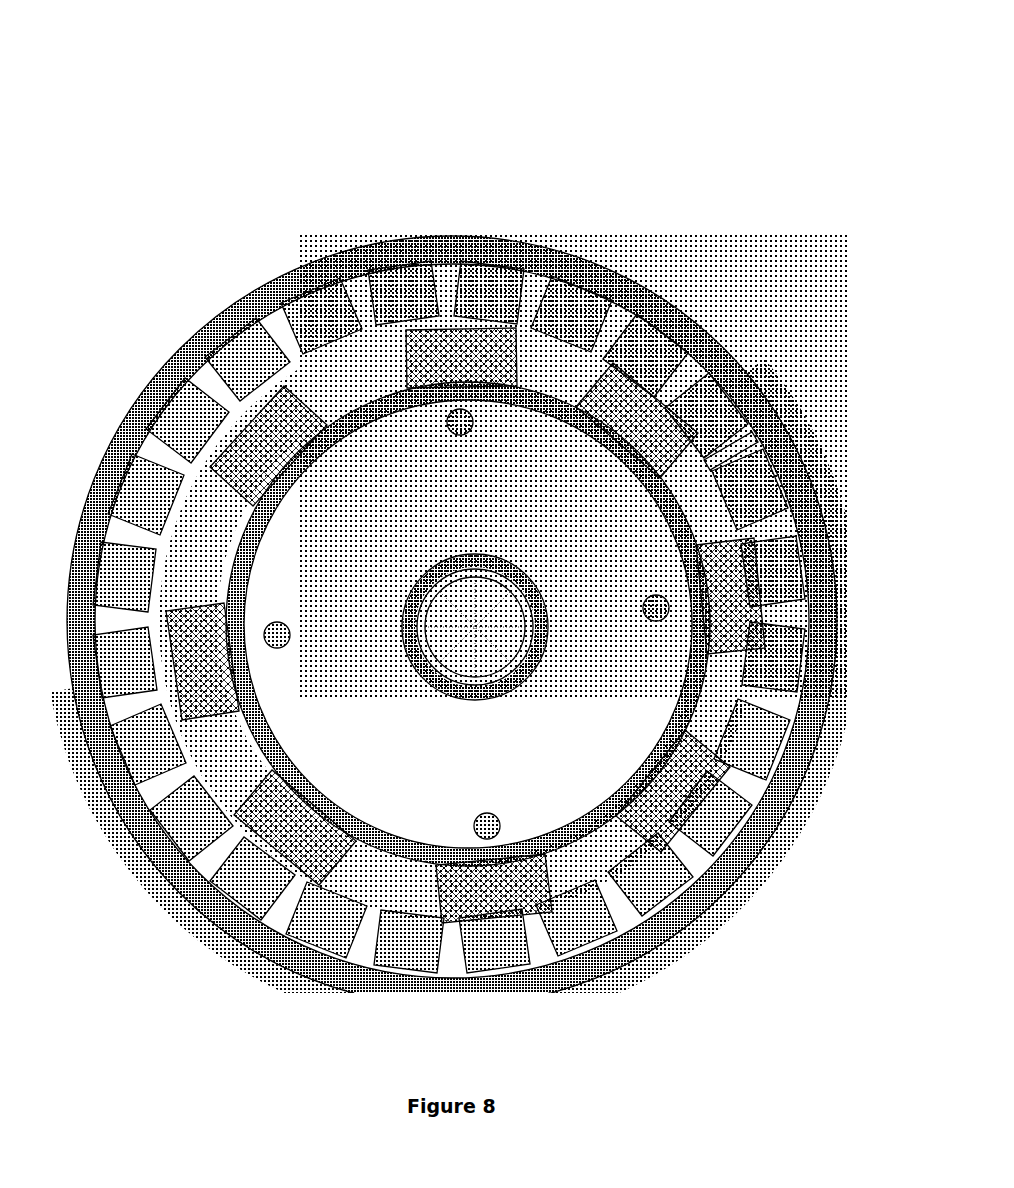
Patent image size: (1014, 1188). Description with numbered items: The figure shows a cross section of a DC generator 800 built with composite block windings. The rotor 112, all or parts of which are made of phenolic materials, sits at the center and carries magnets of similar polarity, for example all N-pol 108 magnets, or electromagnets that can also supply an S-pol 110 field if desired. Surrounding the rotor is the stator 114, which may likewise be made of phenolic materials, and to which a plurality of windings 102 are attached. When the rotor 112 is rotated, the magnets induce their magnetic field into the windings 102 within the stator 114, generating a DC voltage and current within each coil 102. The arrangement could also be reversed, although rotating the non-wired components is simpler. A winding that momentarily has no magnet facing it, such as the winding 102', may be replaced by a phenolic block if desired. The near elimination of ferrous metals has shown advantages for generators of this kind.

The motor assembly 800 is at (511, 544).
The windings 102 is at (501, 568).
The winding without a magnet temporarily facing it 102' is at (806, 381).
The N-pol magnet 108 is at (738, 557).
The S-pol magnet 110 is at (707, 573).
The rotor 112 is at (585, 653).
The stator 114 is at (808, 527).